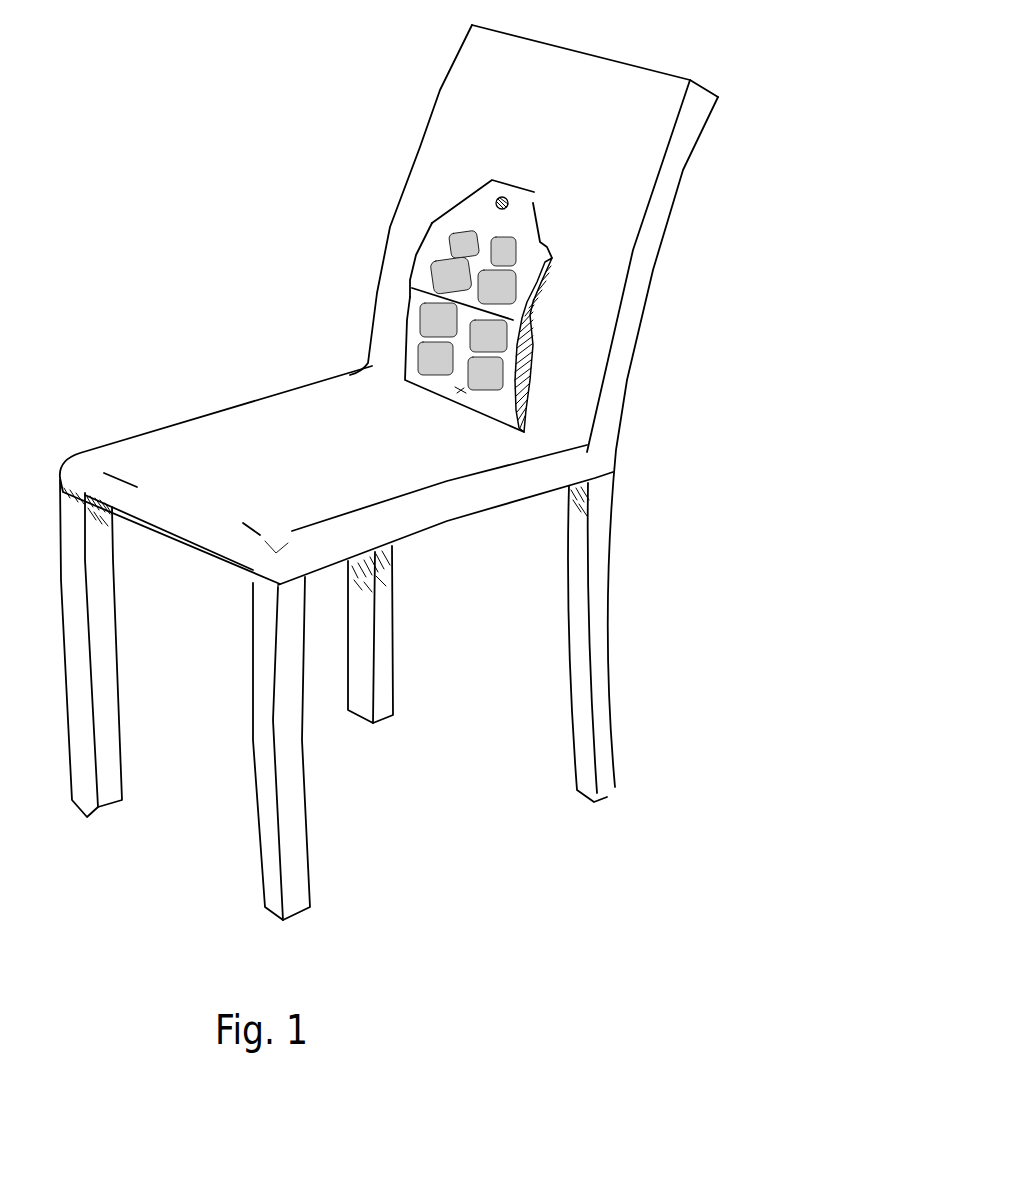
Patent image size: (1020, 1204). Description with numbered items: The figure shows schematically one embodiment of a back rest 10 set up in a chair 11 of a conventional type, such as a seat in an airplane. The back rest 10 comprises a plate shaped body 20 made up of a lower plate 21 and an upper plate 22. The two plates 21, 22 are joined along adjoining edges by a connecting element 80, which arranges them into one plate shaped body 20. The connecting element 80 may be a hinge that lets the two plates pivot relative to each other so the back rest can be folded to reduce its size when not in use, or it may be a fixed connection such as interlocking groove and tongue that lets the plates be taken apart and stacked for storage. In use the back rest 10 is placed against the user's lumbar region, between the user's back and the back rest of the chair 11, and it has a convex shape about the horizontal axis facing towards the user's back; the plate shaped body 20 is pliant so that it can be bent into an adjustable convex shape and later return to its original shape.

The back rest 10 is at (440, 175).
The chair 11 is at (592, 73).
The plate shaped body 20 is at (417, 261).
The lower plate 21 is at (503, 408).
The upper plate 22 is at (527, 254).
The connecting element 80 is at (521, 313).